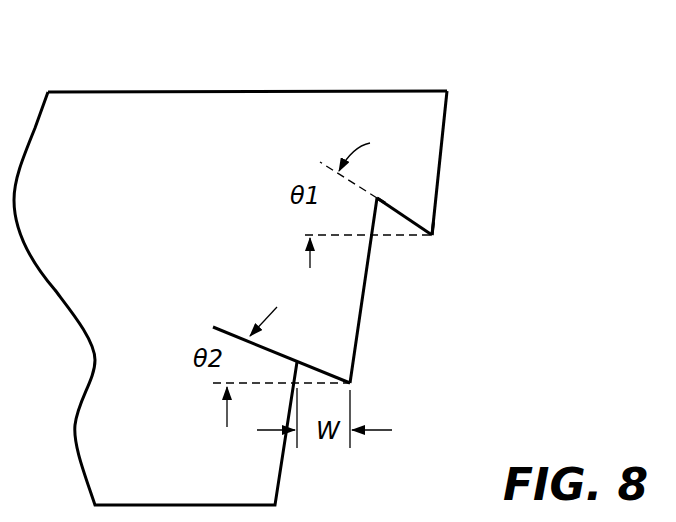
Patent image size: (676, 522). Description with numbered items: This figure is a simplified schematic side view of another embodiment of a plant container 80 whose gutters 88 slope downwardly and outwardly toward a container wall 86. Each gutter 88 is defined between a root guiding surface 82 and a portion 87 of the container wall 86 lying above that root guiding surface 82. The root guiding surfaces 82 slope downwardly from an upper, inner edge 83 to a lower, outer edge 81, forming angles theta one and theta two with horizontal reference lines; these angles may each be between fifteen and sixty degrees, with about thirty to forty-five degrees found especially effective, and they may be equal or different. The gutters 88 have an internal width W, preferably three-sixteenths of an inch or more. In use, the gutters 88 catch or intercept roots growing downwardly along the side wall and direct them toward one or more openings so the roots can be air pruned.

The plant container 80 is at (514, 138).
The lower, outer edge 81 is at (432, 235).
The root guiding surface 82 is at (403, 212).
The upper, inner edge 83 is at (378, 198).
The container wall 86 is at (499, 270).
The portion of the container wall 87 is at (447, 110).
The gutter 88 is at (408, 151).